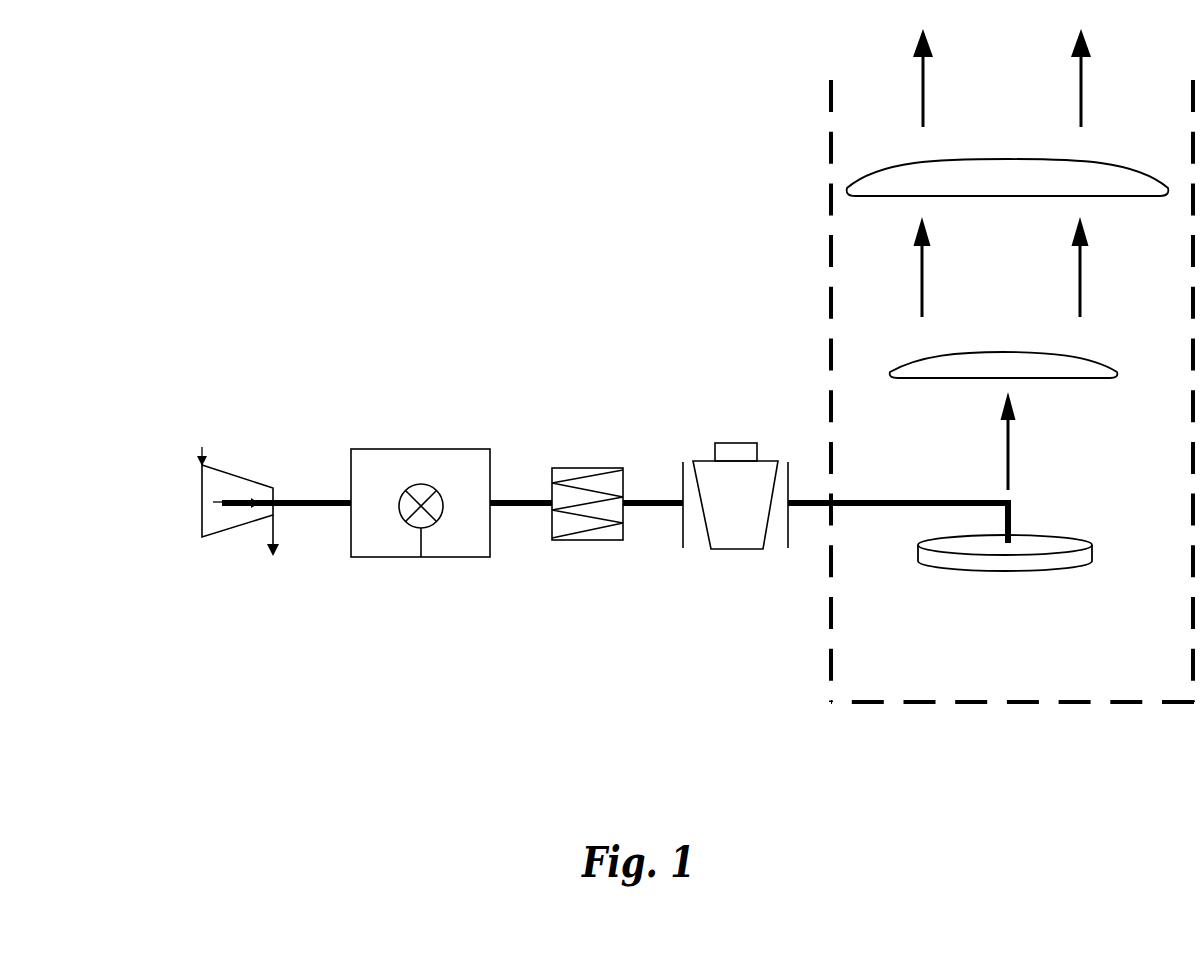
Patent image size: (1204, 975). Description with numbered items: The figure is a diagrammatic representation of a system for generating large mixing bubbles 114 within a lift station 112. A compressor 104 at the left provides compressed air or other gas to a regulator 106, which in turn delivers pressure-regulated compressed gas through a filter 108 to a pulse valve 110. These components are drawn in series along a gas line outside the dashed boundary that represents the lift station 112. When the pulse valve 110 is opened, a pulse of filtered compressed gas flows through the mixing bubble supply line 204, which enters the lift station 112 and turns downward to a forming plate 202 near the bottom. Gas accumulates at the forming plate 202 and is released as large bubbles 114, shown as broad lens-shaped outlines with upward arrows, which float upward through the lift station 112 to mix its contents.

The compressor 104 is at (250, 477).
The regulator 106 is at (402, 448).
The filter 108 is at (587, 468).
The pulse valve 110 is at (728, 440).
The lift station 112 is at (830, 202).
The large mixing bubbles 114 is at (922, 357).
The forming plate 202 is at (1005, 571).
The mixing bubble supply line 204 is at (880, 502).